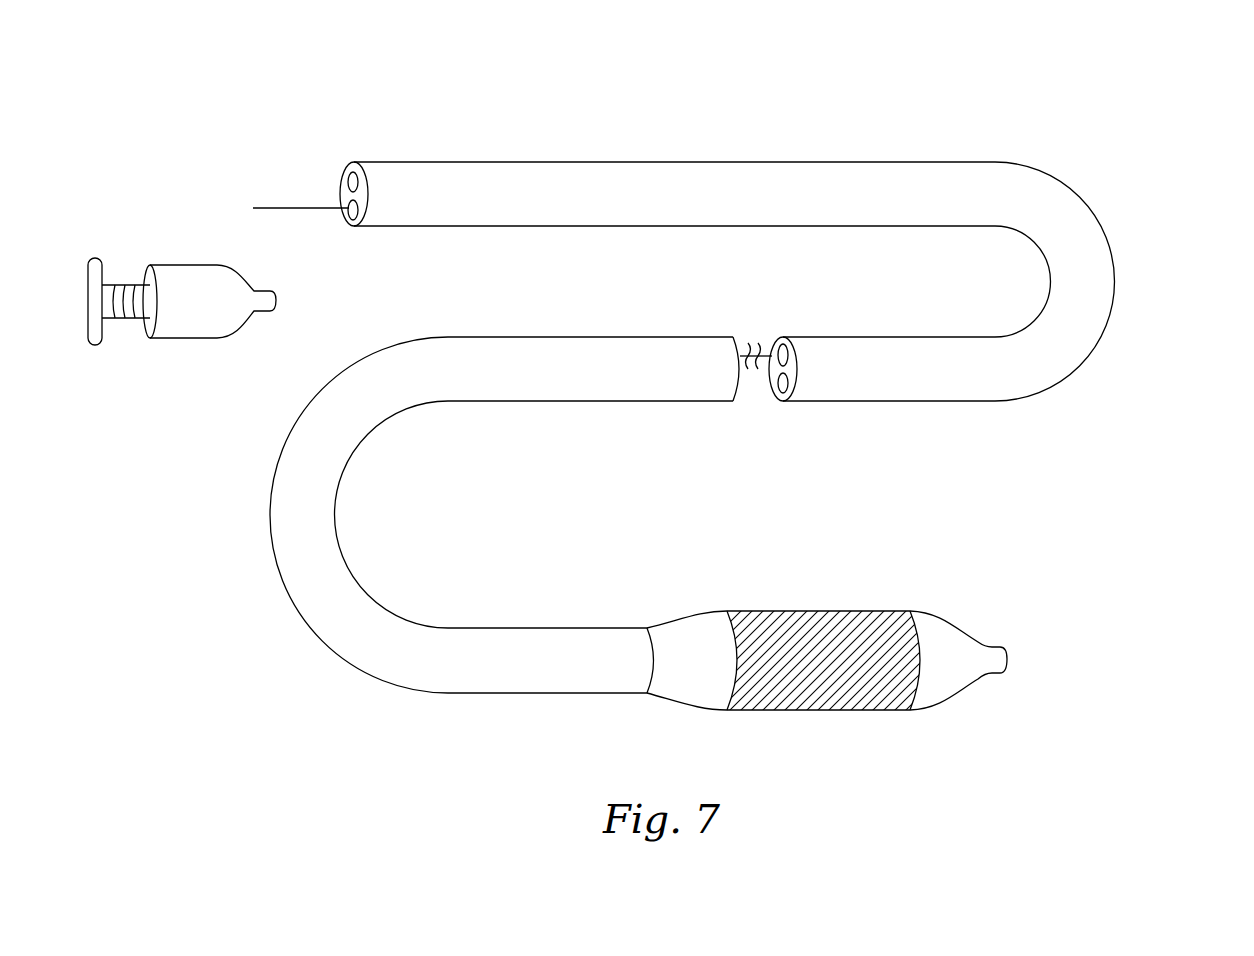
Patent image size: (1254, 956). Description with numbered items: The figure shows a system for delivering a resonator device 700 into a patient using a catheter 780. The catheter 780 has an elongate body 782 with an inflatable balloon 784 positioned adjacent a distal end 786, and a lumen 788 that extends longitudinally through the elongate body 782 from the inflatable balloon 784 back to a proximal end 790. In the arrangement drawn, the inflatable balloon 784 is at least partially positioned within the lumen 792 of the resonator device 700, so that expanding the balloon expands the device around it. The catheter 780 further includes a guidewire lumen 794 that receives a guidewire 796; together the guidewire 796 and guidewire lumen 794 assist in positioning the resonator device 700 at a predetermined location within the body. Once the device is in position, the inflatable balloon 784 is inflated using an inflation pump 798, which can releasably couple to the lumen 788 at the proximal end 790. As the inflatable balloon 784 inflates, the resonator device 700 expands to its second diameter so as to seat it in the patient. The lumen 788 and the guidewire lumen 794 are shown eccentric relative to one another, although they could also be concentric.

The catheter 780 is at (1155, 133).
The elongate body 782 is at (1116, 282).
The inflatable balloon 784 is at (950, 618).
The distal end 786 is at (998, 632).
The lumen 788 is at (347, 182).
The proximal end 790 is at (361, 150).
The lumen of the resonator device 792 is at (737, 631).
The guidewire lumen 794 is at (349, 214).
The guidewire 796 is at (291, 207).
The inflation pump 798 is at (196, 253).
The resonator device 700 is at (813, 611).